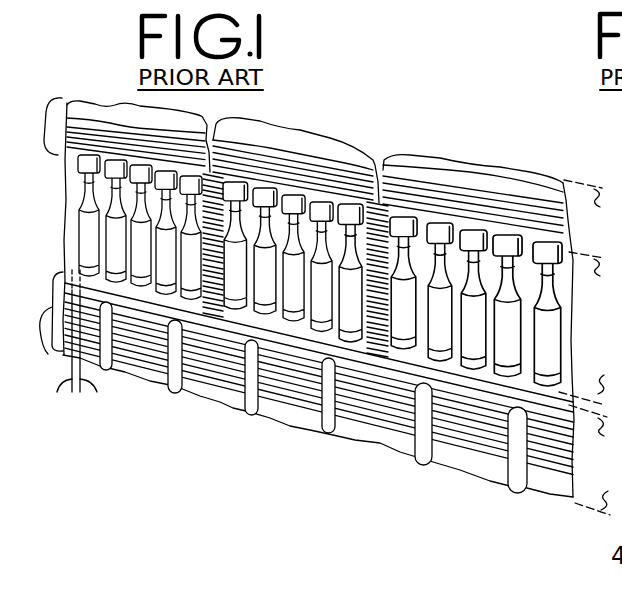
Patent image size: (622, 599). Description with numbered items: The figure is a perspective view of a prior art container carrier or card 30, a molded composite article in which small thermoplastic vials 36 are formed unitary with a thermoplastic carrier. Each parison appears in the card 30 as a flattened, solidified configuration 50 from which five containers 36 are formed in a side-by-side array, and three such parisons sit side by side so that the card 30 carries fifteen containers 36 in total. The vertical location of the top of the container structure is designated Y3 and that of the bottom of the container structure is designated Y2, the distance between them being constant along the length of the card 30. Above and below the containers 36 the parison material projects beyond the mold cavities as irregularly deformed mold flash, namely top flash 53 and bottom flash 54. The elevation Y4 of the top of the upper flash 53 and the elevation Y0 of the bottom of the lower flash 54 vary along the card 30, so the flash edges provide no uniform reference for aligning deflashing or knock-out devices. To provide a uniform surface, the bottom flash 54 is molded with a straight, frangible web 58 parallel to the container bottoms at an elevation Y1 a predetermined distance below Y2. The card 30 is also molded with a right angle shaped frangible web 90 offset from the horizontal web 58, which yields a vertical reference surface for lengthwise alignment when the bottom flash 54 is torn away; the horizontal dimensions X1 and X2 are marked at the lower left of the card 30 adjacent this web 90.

The container carrier or card 30 is at (326, 268).
The vial 36 is at (545, 338).
The flattened, solidified parison configuration 50 is at (97, 107).
The top flash 53 is at (54, 107).
The bottom flash 54 is at (52, 328).
The frangible web 58 is at (278, 413).
The right angle shaped frangible web 90 is at (63, 273).
The horizontal dimension X1 is at (55, 398).
The horizontal dimension X2 is at (103, 398).
The elevation of the bottom of the lower flash Y0 is at (594, 490).
The elevation of the frangible web Y1 is at (591, 434).
The vertical location of the bottom of the container structure Y2 is at (587, 377).
The vertical location of the top of the container structure Y3 is at (592, 277).
The elevation of the top of the upper flash Y4 is at (588, 205).